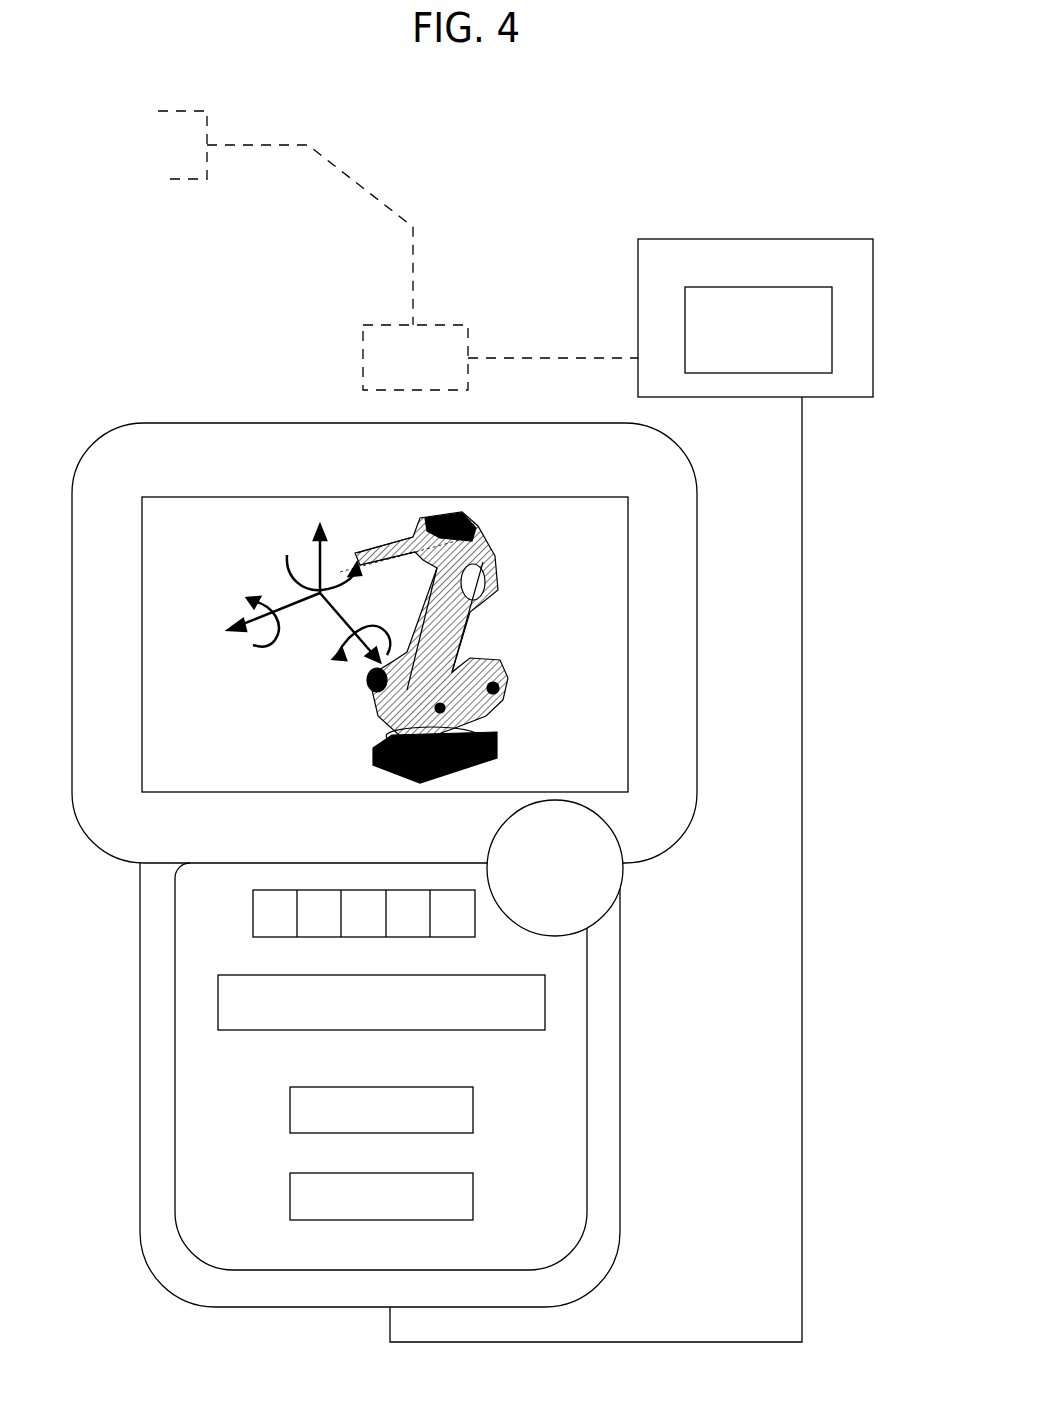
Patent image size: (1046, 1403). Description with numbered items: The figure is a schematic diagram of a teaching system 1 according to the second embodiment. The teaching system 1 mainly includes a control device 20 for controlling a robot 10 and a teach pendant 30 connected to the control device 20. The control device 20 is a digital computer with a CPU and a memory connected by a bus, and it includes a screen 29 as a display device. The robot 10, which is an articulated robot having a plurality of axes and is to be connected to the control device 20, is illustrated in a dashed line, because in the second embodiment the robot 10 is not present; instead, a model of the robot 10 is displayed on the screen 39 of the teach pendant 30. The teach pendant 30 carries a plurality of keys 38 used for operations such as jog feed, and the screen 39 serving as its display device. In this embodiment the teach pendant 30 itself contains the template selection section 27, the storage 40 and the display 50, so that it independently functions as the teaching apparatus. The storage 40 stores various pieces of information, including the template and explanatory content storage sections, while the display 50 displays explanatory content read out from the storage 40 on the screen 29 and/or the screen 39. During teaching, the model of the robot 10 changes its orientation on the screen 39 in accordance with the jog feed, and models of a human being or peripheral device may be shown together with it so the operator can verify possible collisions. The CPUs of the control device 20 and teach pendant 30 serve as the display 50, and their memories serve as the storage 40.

The teaching system 1 is at (738, 161).
The robot 10 is at (418, 171).
The control device 20 is at (758, 239).
The screen 29 is at (780, 350).
The teach pendant 30 is at (643, 979).
The keys 38 is at (243, 915).
The screen 39 is at (598, 685).
The template selection section 27 is at (545, 1000).
The storage 40 is at (473, 1103).
The display 50 is at (473, 1183).